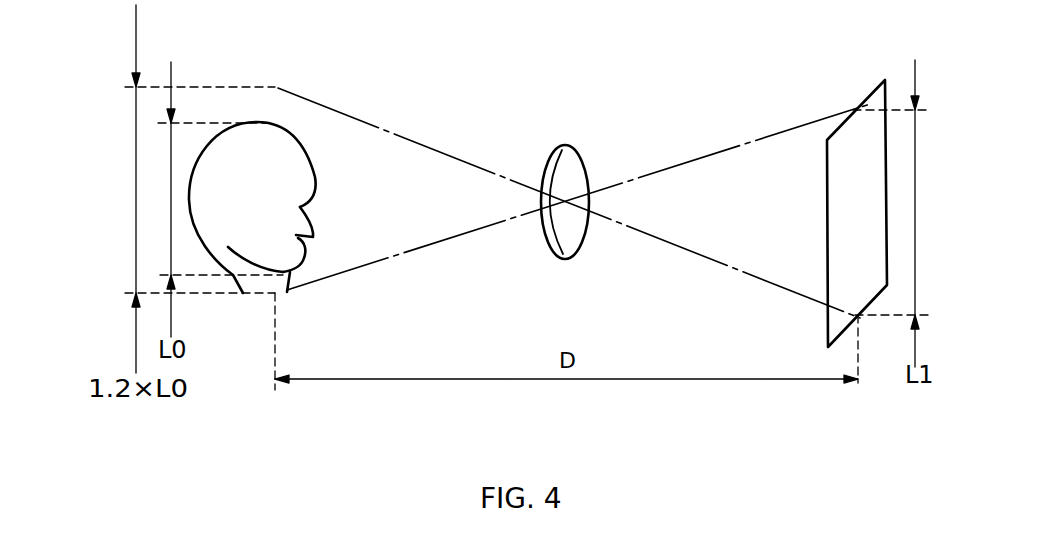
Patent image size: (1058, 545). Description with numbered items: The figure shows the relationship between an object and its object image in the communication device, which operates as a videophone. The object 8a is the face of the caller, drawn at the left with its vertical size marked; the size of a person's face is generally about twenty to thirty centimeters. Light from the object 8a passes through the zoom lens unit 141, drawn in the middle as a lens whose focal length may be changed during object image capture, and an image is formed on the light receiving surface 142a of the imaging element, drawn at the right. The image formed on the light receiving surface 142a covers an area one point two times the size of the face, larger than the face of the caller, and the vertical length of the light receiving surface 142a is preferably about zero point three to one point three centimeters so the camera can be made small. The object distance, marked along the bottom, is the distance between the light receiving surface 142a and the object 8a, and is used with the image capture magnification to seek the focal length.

The object 8a is at (302, 127).
The zoom lens unit 141 is at (563, 130).
The light receiving surface 142a is at (875, 90).